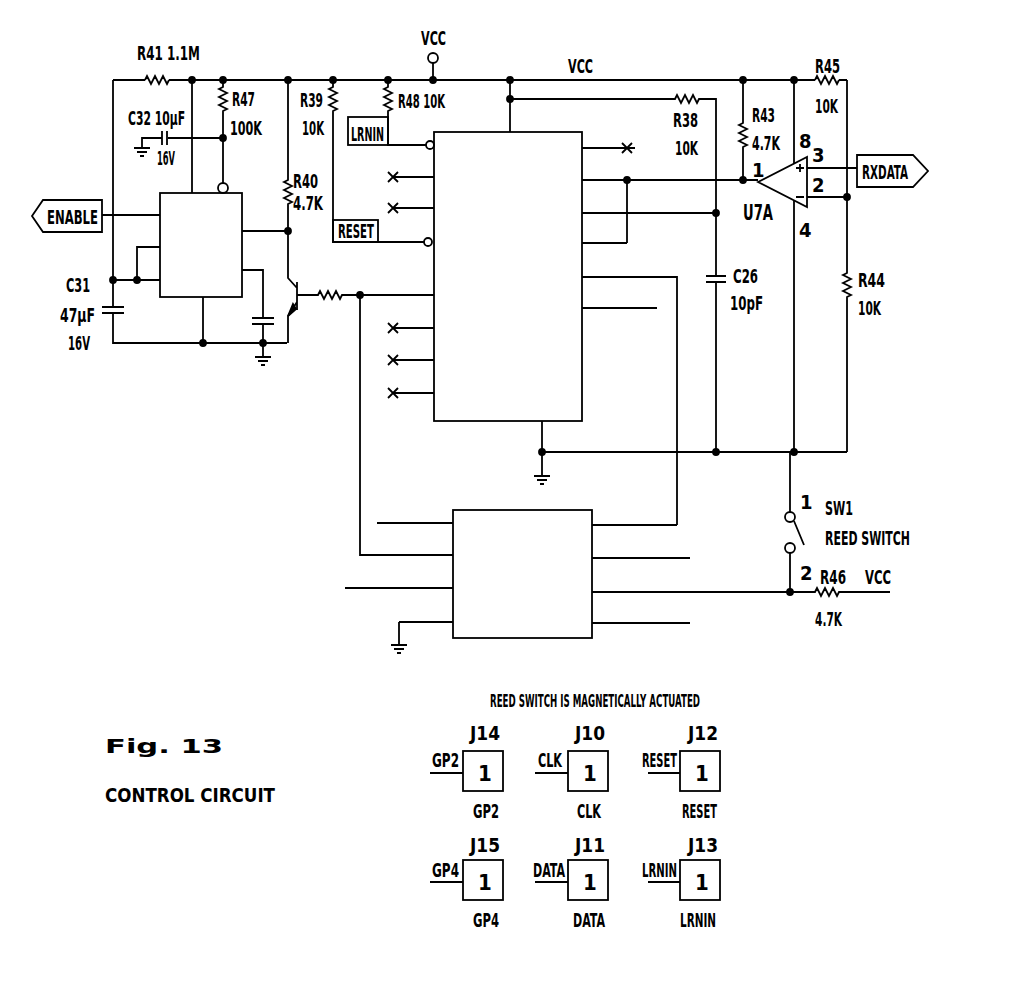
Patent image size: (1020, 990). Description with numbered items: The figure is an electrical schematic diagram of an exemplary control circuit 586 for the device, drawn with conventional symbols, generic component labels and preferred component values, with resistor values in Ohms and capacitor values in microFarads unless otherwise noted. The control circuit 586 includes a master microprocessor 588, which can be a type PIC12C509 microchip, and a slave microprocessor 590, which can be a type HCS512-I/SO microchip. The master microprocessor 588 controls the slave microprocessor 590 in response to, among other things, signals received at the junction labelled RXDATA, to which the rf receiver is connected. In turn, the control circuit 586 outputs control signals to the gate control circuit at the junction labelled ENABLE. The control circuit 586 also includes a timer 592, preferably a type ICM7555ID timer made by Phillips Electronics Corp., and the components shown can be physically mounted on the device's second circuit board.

The control circuit 586 is at (175, 419).
The master microprocessor 588 is at (568, 510).
The slave microprocessor 590 is at (492, 130).
The timer 592 is at (243, 193).